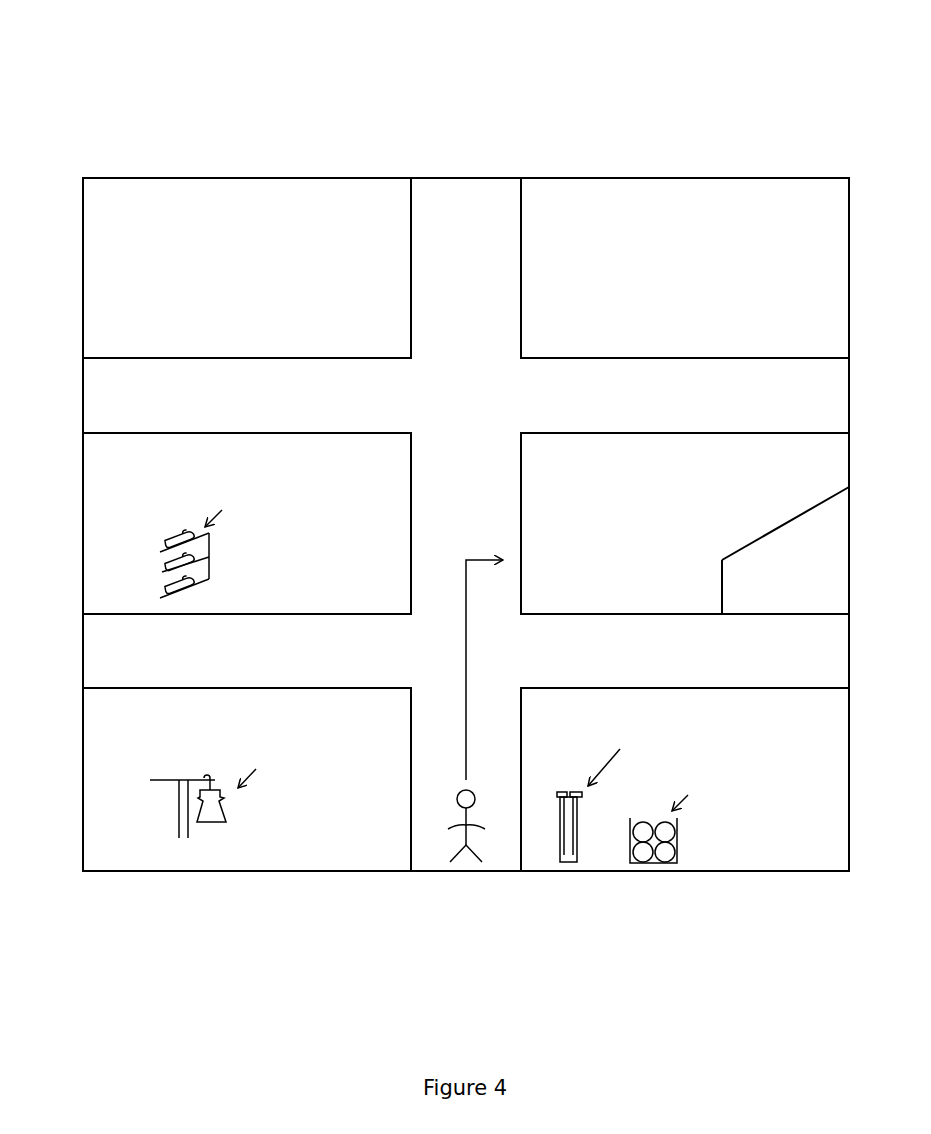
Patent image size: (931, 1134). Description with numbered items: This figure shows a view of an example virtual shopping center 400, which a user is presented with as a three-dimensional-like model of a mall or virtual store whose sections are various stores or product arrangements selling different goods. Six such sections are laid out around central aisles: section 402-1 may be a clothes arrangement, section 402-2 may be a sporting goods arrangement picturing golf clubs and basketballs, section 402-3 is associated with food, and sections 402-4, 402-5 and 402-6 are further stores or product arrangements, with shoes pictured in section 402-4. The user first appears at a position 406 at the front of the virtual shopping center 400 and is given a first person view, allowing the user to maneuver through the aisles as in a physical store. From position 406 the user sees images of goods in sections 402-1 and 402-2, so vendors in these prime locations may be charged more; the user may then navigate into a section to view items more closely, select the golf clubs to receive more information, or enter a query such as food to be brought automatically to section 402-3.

The virtual shopping center 400 is at (147, 28).
The section 402-1 is at (247, 688).
The section 402-2 is at (720, 688).
The section 402-3 is at (521, 495).
The section 402-4 is at (364, 433).
The section 402-5 is at (685, 268).
The section 402-6 is at (247, 268).
The position 406 is at (466, 872).